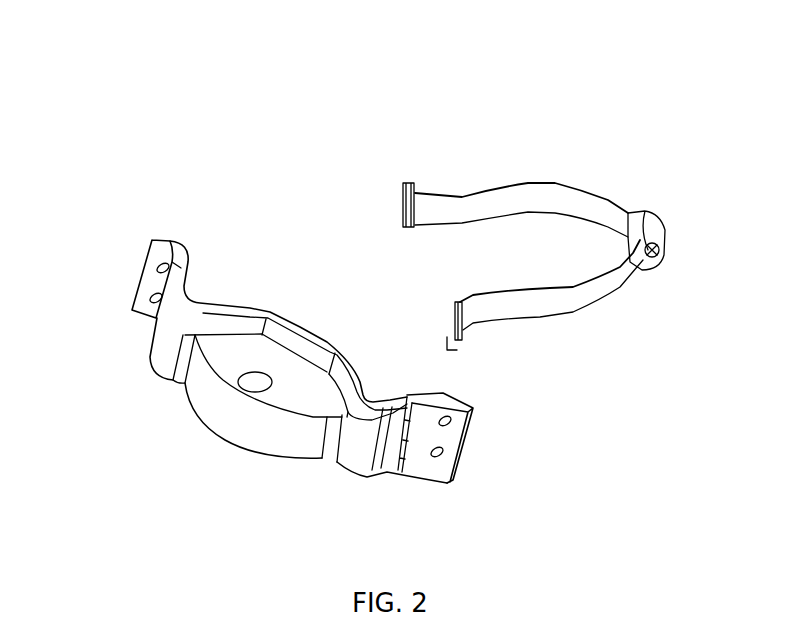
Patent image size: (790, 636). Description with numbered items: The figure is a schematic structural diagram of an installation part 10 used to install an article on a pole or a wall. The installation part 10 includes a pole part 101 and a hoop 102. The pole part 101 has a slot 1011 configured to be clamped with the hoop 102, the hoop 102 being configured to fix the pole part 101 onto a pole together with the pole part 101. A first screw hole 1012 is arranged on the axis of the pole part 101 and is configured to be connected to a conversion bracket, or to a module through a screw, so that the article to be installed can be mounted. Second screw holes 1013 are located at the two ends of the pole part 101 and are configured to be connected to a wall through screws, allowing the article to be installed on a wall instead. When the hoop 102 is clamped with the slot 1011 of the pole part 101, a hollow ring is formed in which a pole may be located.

The installation part 10 is at (390, 184).
The pole part 101 is at (466, 487).
The hoop 102 is at (588, 171).
The slot 1011 is at (396, 448).
The first screw hole 1012 is at (249, 403).
The second screw holes 1013 is at (140, 322).